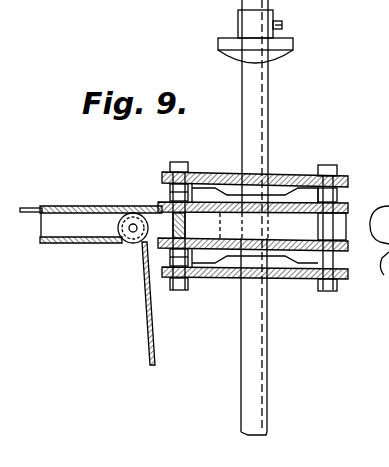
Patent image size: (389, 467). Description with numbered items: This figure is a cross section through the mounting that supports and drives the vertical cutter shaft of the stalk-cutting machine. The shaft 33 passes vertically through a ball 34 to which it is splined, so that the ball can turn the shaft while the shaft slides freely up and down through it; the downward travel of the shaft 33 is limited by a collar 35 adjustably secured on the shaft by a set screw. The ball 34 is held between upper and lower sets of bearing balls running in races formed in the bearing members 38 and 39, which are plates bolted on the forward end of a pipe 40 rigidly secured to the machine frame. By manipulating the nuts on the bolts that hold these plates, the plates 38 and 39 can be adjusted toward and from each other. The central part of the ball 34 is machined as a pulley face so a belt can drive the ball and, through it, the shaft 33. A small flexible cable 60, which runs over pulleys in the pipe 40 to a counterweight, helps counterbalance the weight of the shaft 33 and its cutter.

The shaft 33 is at (253, 113).
The collar 35 is at (277, 44).
The bearing member 38 is at (207, 171).
The ball 34 is at (277, 188).
The bearing member 39 is at (297, 279).
The pipe 40 is at (115, 205).
The flexible cable 60 is at (147, 333).